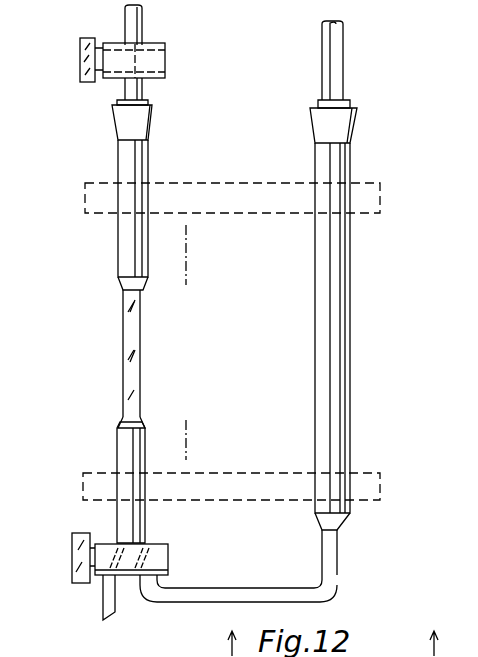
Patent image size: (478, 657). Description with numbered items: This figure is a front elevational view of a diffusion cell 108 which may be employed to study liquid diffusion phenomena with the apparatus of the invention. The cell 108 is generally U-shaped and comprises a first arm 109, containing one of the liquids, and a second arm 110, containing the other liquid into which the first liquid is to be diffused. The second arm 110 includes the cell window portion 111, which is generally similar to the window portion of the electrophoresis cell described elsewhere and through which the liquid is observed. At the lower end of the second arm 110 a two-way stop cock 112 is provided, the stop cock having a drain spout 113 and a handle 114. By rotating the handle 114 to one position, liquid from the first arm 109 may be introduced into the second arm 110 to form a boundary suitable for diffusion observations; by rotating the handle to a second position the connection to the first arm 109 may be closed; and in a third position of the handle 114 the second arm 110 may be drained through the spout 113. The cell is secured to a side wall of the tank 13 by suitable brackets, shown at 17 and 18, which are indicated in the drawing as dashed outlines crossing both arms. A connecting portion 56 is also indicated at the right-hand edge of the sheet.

The tank 13 is at (178, 243).
The bracket 17 is at (242, 473).
The bracket 18 is at (190, 183).
The connecting conduit 56 is at (477, 612).
The diffusion cell 108 is at (362, 298).
The first arm 109 is at (338, 405).
The second arm 110 is at (128, 228).
The cell window portion 111 is at (133, 357).
The two-way stop cock 112 is at (160, 545).
The drain spout 113 is at (105, 600).
The handle 114 is at (72, 566).